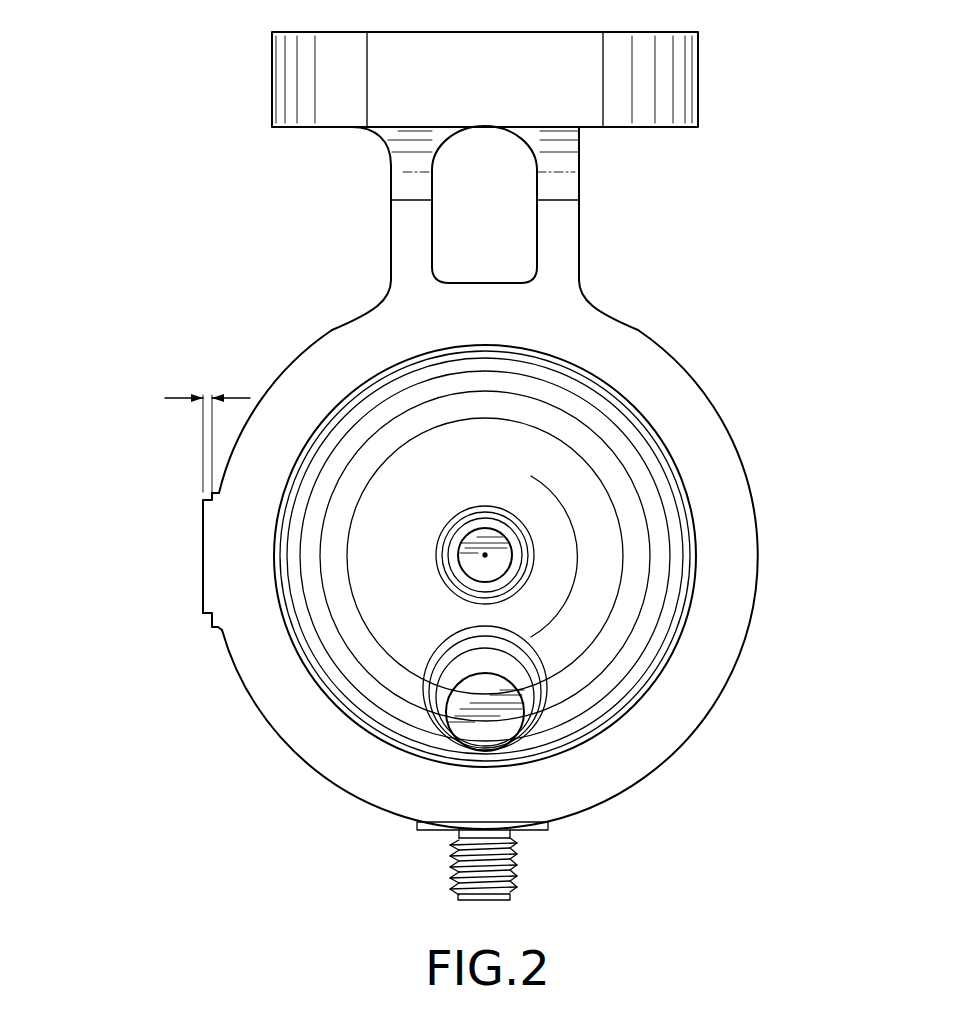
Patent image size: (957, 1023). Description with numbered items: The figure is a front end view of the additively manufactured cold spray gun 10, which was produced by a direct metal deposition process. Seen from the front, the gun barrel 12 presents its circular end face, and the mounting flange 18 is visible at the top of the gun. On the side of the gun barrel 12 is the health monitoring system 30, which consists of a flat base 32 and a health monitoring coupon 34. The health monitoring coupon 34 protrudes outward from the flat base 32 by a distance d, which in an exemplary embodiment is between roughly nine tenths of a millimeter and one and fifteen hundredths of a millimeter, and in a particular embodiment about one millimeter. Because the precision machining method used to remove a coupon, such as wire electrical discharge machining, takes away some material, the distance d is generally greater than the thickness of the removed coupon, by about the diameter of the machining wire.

The cold spray gun 10 is at (90, 108).
The gun barrel 12 is at (707, 392).
The mounting flange 18 is at (698, 79).
The health monitoring system 30 is at (153, 600).
The flat base 32 is at (205, 622).
The health monitoring coupon 34 is at (203, 583).
The distance d is at (207, 432).